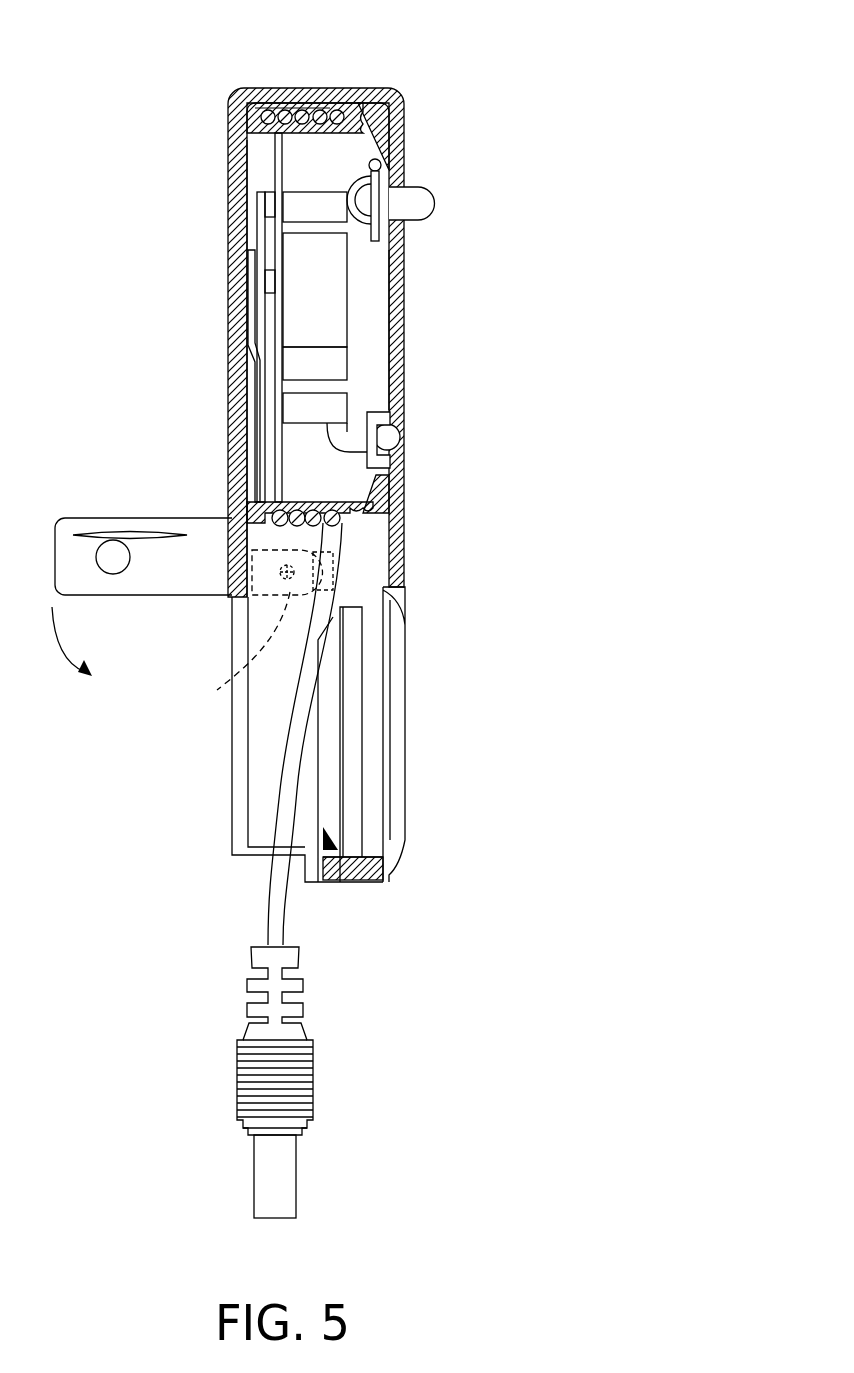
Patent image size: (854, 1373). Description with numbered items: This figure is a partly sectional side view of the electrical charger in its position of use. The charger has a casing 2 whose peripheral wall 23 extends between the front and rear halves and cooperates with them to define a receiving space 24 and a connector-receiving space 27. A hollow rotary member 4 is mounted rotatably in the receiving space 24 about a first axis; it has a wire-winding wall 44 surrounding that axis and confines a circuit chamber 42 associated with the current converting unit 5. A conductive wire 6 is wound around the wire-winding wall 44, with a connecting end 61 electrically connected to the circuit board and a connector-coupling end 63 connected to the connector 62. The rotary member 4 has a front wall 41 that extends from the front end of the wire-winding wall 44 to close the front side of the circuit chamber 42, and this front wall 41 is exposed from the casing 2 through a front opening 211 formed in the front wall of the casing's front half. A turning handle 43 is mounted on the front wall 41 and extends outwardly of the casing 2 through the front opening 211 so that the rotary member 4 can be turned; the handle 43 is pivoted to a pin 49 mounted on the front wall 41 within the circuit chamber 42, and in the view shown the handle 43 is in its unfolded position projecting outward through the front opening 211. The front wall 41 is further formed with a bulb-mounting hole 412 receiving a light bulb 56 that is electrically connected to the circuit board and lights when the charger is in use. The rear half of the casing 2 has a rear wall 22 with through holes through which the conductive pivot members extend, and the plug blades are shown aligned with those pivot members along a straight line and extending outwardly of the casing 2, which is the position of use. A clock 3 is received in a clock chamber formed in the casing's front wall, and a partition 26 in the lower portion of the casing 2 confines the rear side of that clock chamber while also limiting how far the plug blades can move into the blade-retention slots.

The casing 2 is at (403, 90).
The rear wall 22 is at (230, 227).
The front opening 211 is at (398, 128).
The peripheral wall 23 is at (334, 90).
The wire-winding wall 44 is at (365, 92).
The connecting end 61 is at (262, 102).
The receiving space 24 is at (258, 147).
The circuit chamber 42 is at (312, 157).
The current converting unit 5 is at (358, 337).
The rotary member 4 is at (404, 158).
The pin 49 is at (402, 250).
The turning handle 43 is at (432, 203).
The front wall 41 is at (398, 335).
The bulb-mounting hole 412 is at (392, 442).
The light bulb 56 is at (388, 422).
The connector-receiving space 27 is at (262, 778).
The partition 26 is at (310, 735).
The clock 3 is at (408, 802).
The connector-coupling end 63 is at (273, 933).
The conductive wire 6 is at (344, 1026).
The connector 62 is at (280, 1173).